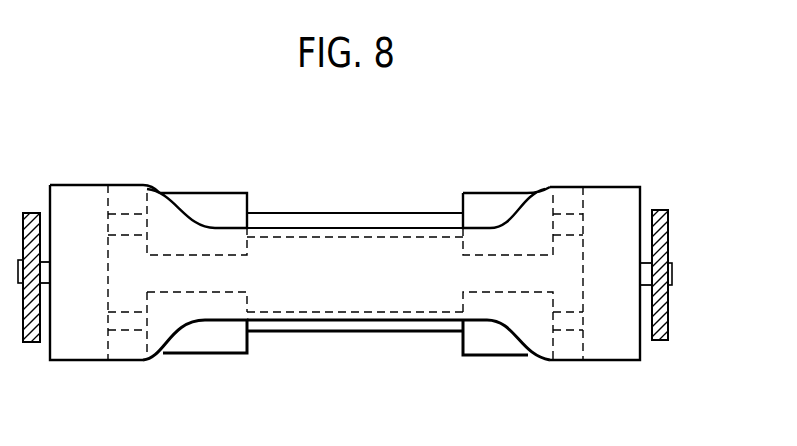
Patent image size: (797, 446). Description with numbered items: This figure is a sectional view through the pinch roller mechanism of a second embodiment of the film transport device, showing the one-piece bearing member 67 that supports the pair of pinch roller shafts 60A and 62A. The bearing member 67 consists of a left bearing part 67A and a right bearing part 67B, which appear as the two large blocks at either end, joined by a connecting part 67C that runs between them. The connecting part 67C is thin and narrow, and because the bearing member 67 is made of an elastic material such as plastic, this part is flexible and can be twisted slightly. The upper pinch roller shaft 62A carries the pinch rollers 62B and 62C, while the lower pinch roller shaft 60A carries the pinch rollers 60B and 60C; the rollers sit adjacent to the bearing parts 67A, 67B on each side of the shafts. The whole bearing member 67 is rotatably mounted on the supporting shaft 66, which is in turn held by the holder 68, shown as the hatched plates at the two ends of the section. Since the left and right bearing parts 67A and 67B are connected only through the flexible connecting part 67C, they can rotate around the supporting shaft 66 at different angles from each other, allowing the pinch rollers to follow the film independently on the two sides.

The bearing member 67 is at (422, 260).
The left bearing part 67A is at (82, 190).
The right bearing part 67B is at (610, 187).
The connecting part 67C is at (318, 228).
The pinch roller shaft 62A is at (277, 213).
The pinch roller 62B is at (205, 192).
The pinch roller 62C is at (502, 192).
The pinch roller shaft 60A is at (365, 332).
The pinch roller 60B is at (215, 357).
The pinch roller 60C is at (497, 357).
The supporting shaft 66 is at (672, 272).
The holder 68 is at (668, 230).